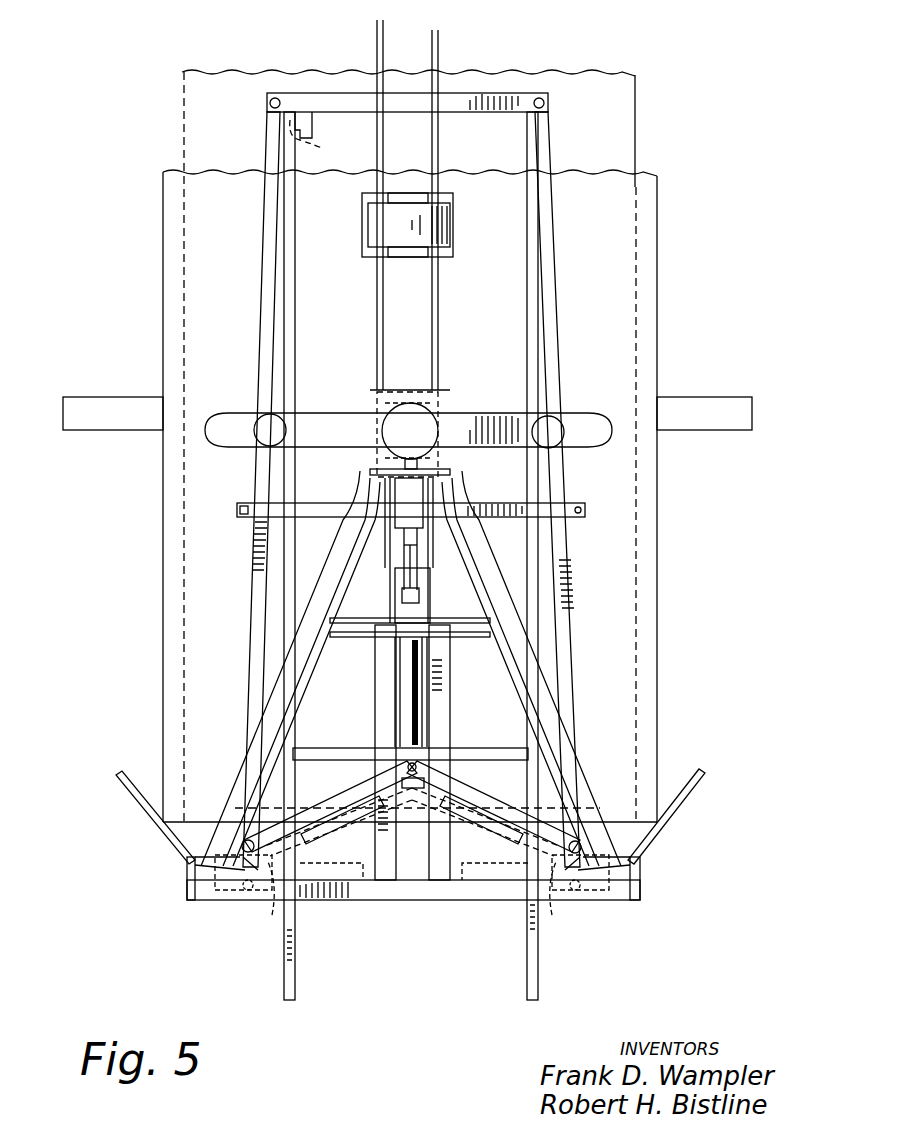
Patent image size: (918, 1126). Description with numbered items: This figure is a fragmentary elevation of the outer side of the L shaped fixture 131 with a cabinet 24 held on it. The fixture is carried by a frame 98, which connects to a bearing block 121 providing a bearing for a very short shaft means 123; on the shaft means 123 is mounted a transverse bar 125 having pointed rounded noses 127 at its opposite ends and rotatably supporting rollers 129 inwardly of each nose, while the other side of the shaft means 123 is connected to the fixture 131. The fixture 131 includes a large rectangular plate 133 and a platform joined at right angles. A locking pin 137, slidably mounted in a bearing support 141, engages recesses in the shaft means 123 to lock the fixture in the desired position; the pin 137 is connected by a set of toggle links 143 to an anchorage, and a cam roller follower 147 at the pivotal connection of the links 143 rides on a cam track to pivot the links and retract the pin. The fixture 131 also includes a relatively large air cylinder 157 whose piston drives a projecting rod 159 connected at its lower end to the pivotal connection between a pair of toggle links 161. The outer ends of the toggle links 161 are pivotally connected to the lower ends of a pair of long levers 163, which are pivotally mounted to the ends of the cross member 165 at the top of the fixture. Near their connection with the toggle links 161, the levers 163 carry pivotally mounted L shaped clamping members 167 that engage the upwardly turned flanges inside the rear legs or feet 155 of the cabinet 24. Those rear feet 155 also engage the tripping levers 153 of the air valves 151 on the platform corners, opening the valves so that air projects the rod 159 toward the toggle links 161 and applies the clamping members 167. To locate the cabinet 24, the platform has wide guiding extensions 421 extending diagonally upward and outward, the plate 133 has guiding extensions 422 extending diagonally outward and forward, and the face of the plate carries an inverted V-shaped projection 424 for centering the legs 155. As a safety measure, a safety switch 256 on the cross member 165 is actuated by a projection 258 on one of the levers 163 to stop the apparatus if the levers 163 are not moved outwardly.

The cabinet 24 is at (640, 99).
The L shaped fixture 131 is at (162, 258).
The cross member 165 is at (473, 93).
The safety switch 256 is at (306, 118).
The projection 258 is at (325, 141).
The L shaped clamping member 167 is at (366, 218).
The frame 98 is at (284, 980).
The long lever 163 is at (255, 580).
The large rectangular plate 133 is at (163, 495).
The transverse bar 125 is at (316, 413).
The pointed rounded nose 127 is at (213, 428).
The roller 129 is at (262, 438).
The bearing block 121 is at (450, 398).
The shaft means 123 is at (405, 414).
The locking pin 137 is at (404, 469).
The bearing support 141 is at (400, 497).
The air cylinder 157 is at (390, 545).
The toggle links 143 is at (424, 588).
The cam roller follower 147 is at (402, 598).
The projecting rod 159 is at (410, 704).
The toggle links 161 is at (352, 796).
The inverted V-shaped projection 424 is at (515, 838).
The rear corner feet 155 is at (190, 833).
The air valve 151 is at (218, 900).
The tripping lever 153 is at (182, 872).
The guiding extension 421 is at (124, 780).
The guiding extension 422 is at (74, 397).